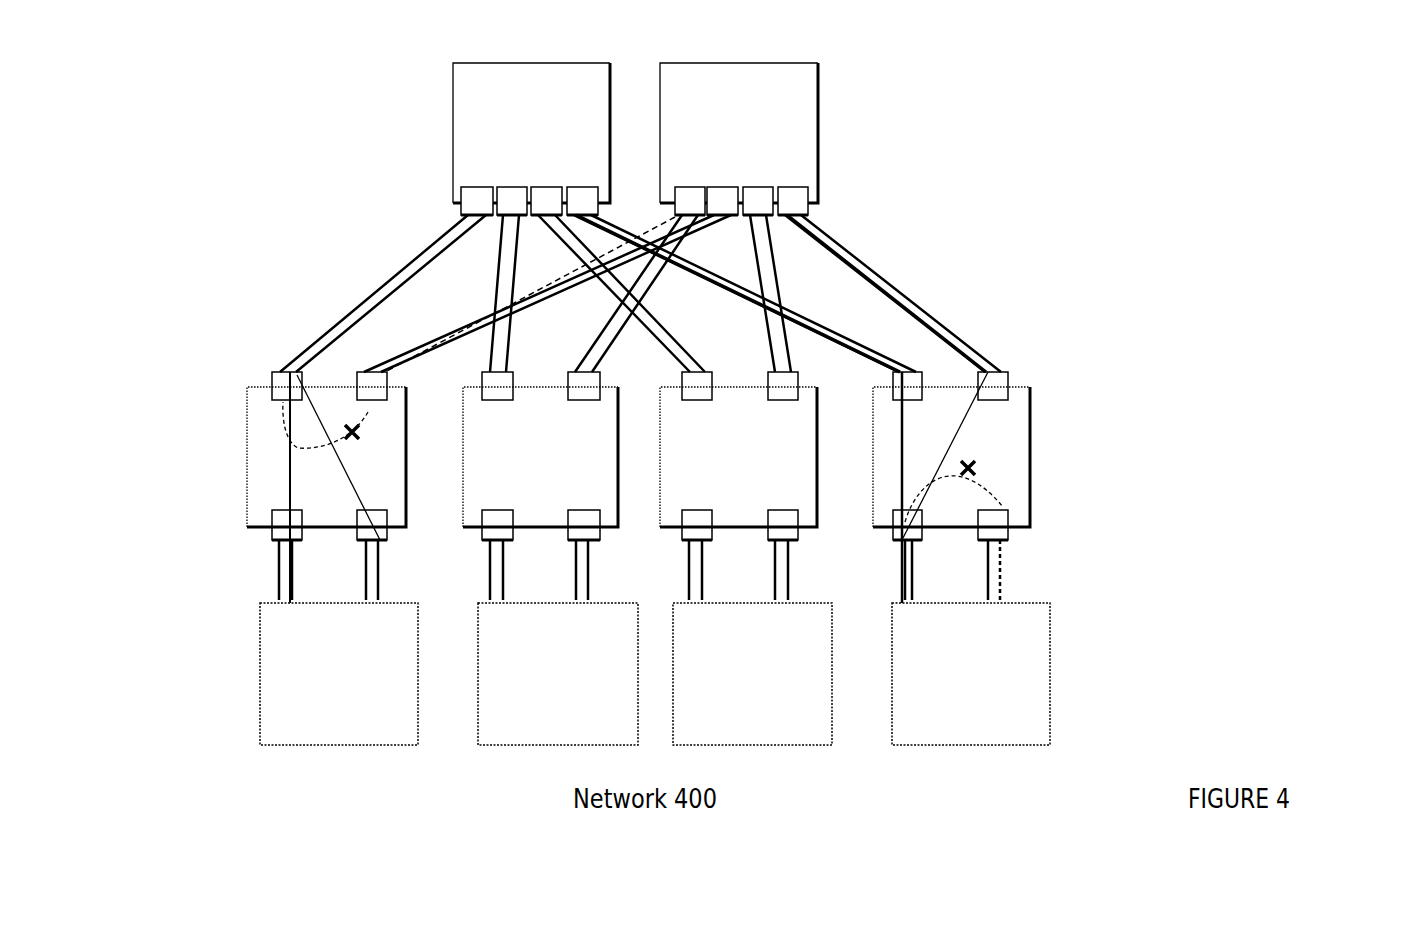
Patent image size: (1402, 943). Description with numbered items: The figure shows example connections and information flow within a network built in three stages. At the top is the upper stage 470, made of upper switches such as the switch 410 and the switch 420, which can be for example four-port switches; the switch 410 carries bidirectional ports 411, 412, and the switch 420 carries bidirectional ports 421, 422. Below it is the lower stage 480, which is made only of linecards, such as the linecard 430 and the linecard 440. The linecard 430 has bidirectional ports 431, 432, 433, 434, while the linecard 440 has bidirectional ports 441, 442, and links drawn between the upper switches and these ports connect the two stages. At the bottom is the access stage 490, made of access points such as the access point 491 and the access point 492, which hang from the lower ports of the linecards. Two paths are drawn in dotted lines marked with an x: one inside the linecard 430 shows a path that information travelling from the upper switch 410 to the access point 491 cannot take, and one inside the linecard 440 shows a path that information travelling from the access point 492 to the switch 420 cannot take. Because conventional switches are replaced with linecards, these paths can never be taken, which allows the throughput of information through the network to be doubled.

The upper switch 410 is at (453, 105).
The bidirectional port 411 is at (461, 197).
The bidirectional port 412 is at (462, 218).
The upper switch 420 is at (820, 118).
The bidirectional port 421 is at (809, 199).
The bidirectional port 422 is at (705, 190).
The upper stage 470 is at (1354, 131).
The linecard 430 is at (250, 448).
The bidirectional port 431 is at (270, 385).
The bidirectional port 432 is at (270, 522).
The bidirectional port 433 is at (386, 399).
The bidirectional port 434 is at (383, 530).
The linecard 440 is at (1033, 452).
The bidirectional port 441 is at (1011, 394).
The bidirectional port 442 is at (1012, 516).
The lower stage 480 is at (1354, 456).
The access stage 490 is at (1354, 666).
The access point 491 is at (258, 679).
The access point 492 is at (1057, 668).